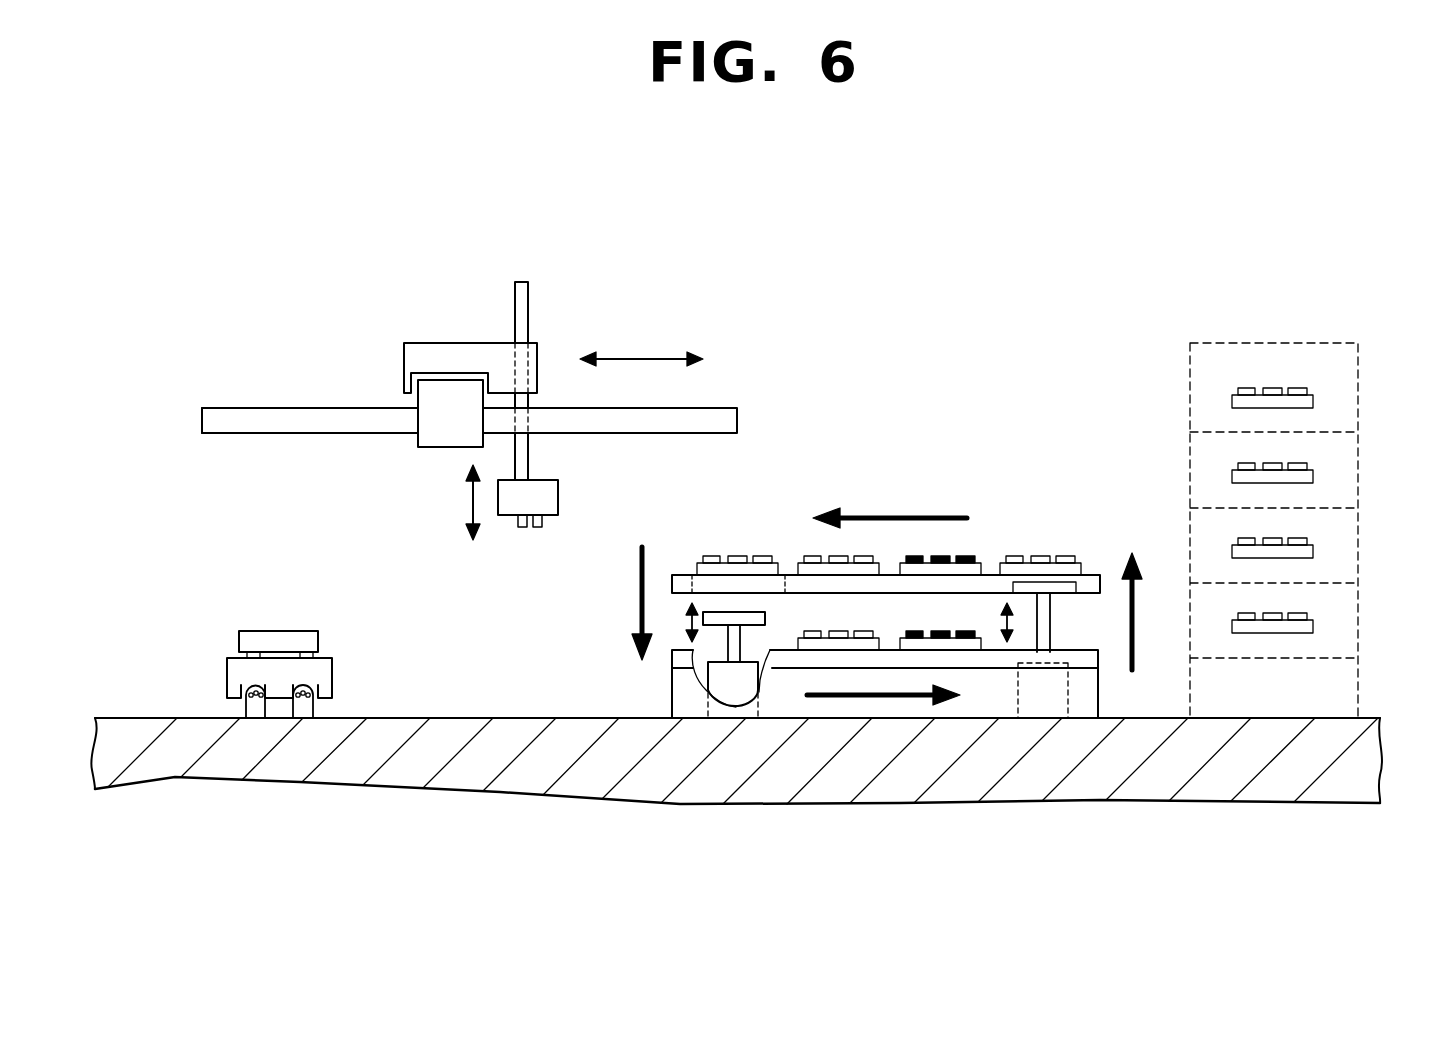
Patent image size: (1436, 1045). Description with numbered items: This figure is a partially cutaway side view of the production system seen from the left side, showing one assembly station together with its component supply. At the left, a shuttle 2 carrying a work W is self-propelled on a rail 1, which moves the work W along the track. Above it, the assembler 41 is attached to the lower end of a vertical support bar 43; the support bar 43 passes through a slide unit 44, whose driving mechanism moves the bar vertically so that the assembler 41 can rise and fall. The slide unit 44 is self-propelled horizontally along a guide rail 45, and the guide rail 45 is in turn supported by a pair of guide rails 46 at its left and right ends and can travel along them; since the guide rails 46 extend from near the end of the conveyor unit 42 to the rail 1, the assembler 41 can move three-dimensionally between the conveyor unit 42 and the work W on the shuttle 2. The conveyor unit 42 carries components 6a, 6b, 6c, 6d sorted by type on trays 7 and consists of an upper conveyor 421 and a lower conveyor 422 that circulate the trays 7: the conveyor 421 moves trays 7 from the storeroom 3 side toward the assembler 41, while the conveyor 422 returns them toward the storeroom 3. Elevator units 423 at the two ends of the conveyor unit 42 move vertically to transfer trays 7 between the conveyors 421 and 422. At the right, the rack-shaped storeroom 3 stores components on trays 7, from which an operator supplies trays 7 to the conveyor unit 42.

The rail 1 is at (250, 710).
The shuttle 2 is at (313, 640).
The work W is at (278, 633).
The storeroom 3 is at (1360, 360).
The tray 7 is at (1315, 402).
The component 6a is at (708, 557).
The component 6b is at (805, 568).
The component 6c is at (973, 568).
The component 6d is at (1072, 558).
The assembler 41 is at (557, 497).
The conveyor unit 42 is at (888, 465).
The support bar 43 is at (522, 282).
The slide unit 44 is at (445, 343).
The guide rail 45 is at (430, 440).
The guide rail 46 is at (280, 417).
The conveyor 421 is at (678, 580).
The conveyor 422 is at (678, 698).
The elevator unit 423 is at (765, 615).